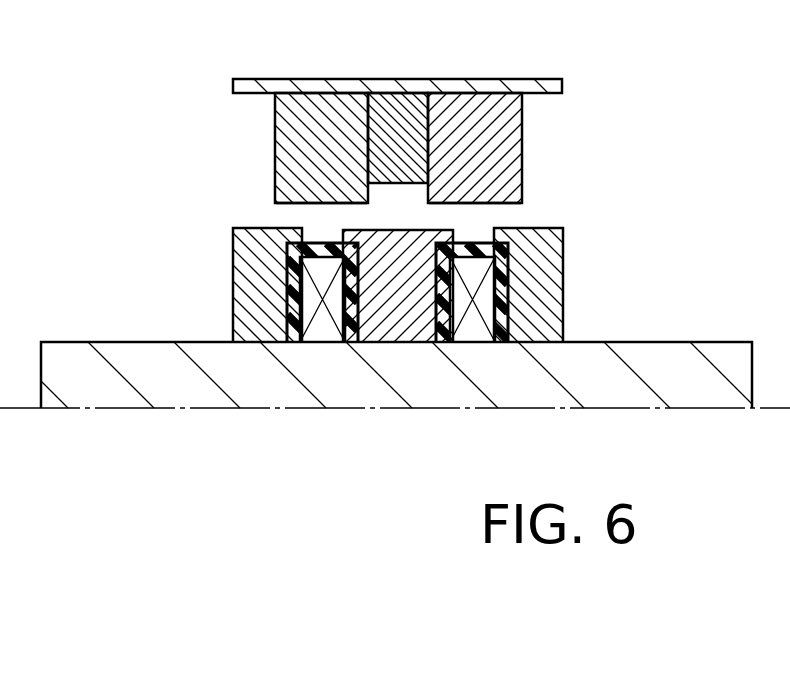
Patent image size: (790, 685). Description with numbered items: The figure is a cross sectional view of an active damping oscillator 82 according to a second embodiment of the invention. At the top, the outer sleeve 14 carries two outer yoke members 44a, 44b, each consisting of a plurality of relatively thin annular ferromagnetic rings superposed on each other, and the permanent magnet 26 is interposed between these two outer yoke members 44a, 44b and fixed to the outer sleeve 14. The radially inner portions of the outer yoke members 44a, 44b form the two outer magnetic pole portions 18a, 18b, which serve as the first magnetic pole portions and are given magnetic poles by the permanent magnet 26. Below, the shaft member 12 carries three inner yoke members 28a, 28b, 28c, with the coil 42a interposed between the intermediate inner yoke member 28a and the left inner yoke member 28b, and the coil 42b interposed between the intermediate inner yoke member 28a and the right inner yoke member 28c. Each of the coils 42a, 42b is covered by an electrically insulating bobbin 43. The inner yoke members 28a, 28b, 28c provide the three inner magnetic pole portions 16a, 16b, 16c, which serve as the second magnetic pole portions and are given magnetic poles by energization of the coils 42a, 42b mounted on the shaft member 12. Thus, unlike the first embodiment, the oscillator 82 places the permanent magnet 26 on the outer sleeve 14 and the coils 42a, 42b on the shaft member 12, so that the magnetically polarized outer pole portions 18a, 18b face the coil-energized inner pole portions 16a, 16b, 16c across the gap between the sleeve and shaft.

The shaft member 12 is at (132, 353).
The outer sleeve 14 is at (262, 85).
The inner magnetic pole portion 16a is at (383, 233).
The inner magnetic pole portion 16b is at (248, 233).
The inner magnetic pole portion 16c is at (543, 230).
The outer magnetic pole portion 18a is at (302, 202).
The outer magnetic pole portion 18b is at (493, 203).
The permanent magnet 26 is at (413, 108).
The intermediate inner yoke member 28a is at (403, 345).
The left inner yoke member 28b is at (210, 283).
The right inner yoke member 28c is at (585, 290).
The annular coil 42a is at (322, 332).
The annular coil 42b is at (471, 332).
The electrically insulating bobbin 43 is at (292, 312).
The outer yoke member 44a is at (257, 142).
The outer yoke member 44b is at (528, 151).
The active damping oscillator 82 is at (148, 150).